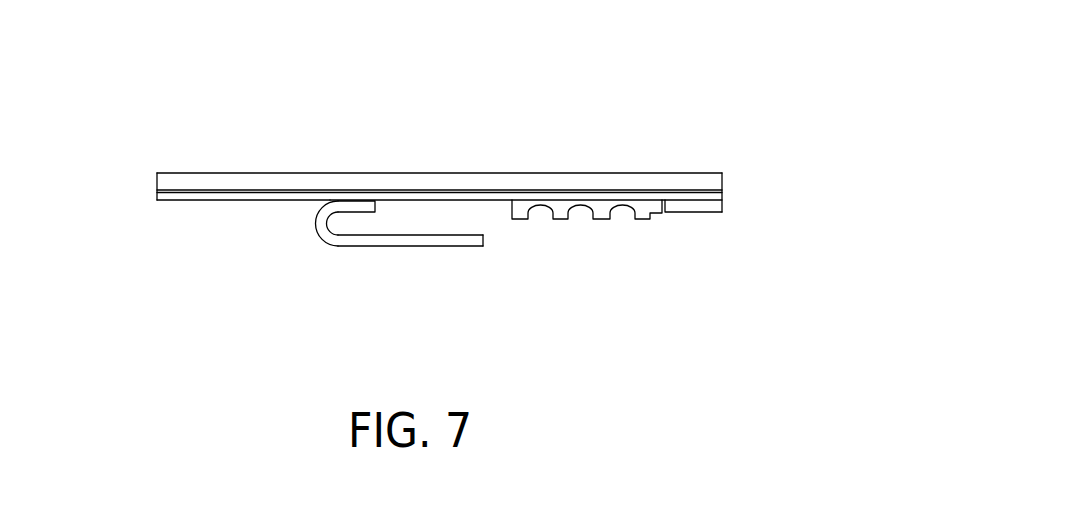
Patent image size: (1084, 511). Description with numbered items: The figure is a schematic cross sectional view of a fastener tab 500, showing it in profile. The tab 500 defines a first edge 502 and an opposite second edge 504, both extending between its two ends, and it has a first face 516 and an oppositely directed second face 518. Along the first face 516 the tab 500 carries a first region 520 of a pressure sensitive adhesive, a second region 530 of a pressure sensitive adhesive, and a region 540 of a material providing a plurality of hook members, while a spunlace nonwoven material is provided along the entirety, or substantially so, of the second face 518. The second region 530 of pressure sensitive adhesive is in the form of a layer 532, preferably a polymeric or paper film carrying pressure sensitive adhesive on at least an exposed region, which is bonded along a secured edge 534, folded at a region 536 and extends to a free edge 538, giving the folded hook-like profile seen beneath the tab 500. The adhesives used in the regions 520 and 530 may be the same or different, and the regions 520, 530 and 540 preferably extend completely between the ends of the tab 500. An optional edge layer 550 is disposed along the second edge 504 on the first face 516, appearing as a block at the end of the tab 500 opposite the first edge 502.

The fastener tab 500 is at (726, 98).
The first edge 502 is at (157, 182).
The second edge 504 is at (723, 183).
The first face 516 is at (238, 203).
The second face 518 is at (257, 173).
The first region of pressure sensitive adhesive 520 is at (182, 203).
The second region of pressure sensitive adhesive 530 is at (410, 247).
The layer 532 is at (357, 247).
The secured edge 534 is at (360, 208).
The folded region 536 is at (320, 221).
The free edge 538 is at (490, 246).
The region of hook members 540 is at (560, 219).
The edge layer 550 is at (695, 220).